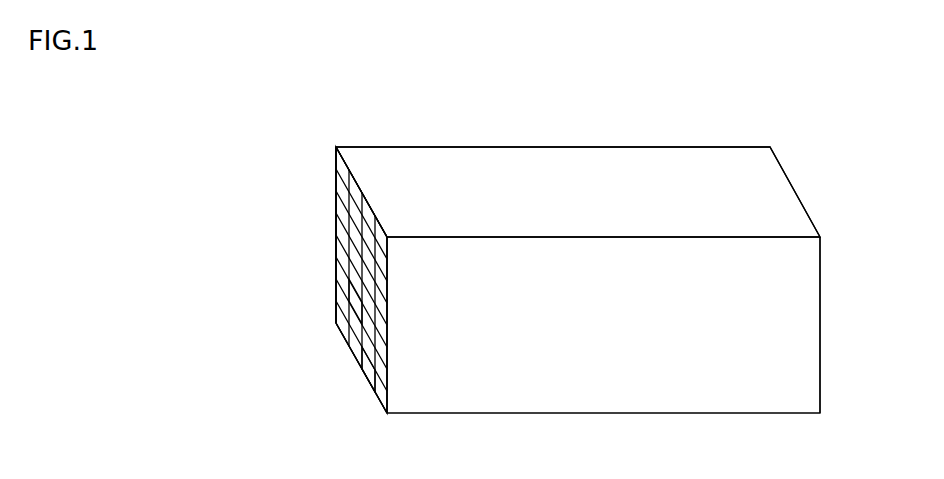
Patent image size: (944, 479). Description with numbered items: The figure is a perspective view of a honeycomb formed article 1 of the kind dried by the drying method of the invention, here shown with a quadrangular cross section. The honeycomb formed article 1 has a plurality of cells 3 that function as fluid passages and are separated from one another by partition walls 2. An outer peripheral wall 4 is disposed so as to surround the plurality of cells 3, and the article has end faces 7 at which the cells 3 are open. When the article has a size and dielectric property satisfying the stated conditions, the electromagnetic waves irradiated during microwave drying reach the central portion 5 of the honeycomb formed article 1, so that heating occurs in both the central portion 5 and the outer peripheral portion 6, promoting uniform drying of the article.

The honeycomb formed article 1 is at (856, 48).
The partition walls 2 is at (337, 268).
The cells 3 is at (337, 248).
The outer peripheral wall 4 is at (495, 160).
The central portion 5 is at (343, 296).
The outer peripheral portion 6 is at (351, 377).
The end faces 7 is at (323, 172).